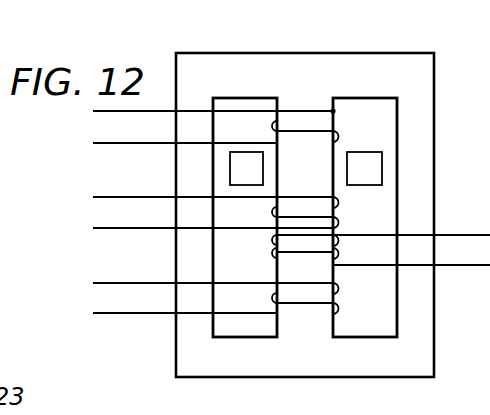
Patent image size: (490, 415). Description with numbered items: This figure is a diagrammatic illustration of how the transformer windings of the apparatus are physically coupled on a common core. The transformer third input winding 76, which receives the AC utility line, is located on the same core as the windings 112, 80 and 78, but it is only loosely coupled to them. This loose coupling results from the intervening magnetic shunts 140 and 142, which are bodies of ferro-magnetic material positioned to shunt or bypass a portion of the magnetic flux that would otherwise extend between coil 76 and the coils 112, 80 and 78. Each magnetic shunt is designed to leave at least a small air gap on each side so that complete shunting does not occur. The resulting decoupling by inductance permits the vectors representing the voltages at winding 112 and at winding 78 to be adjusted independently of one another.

The transformer third input winding 76 is at (299, 110).
The transformer winding 78 is at (338, 297).
The transformer winding 80 is at (272, 253).
The transformer winding 112 is at (335, 213).
The magnetic shunt 140 is at (235, 173).
The magnetic shunt 142 is at (374, 166).